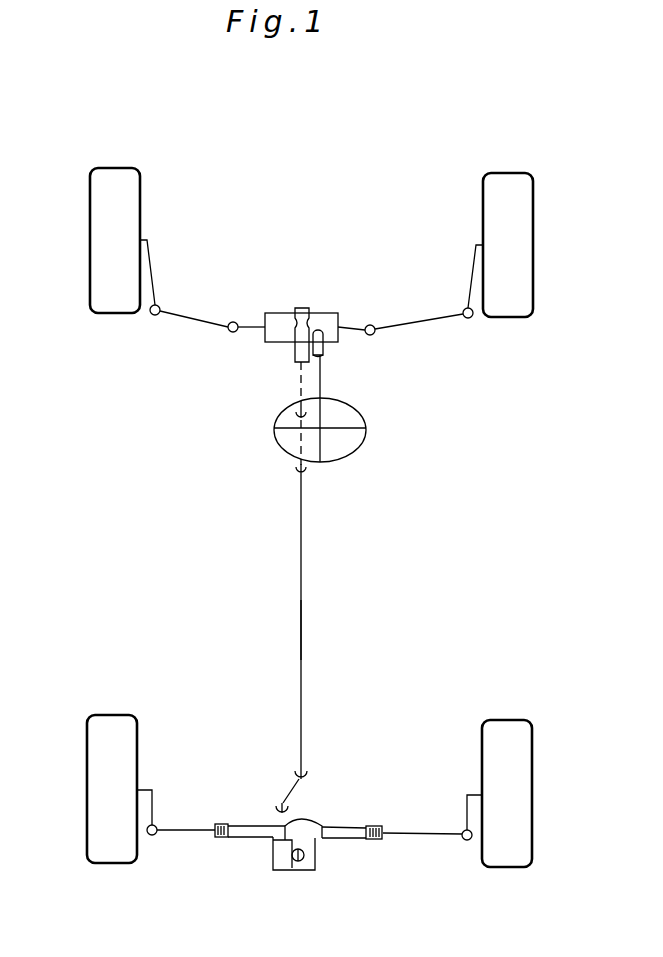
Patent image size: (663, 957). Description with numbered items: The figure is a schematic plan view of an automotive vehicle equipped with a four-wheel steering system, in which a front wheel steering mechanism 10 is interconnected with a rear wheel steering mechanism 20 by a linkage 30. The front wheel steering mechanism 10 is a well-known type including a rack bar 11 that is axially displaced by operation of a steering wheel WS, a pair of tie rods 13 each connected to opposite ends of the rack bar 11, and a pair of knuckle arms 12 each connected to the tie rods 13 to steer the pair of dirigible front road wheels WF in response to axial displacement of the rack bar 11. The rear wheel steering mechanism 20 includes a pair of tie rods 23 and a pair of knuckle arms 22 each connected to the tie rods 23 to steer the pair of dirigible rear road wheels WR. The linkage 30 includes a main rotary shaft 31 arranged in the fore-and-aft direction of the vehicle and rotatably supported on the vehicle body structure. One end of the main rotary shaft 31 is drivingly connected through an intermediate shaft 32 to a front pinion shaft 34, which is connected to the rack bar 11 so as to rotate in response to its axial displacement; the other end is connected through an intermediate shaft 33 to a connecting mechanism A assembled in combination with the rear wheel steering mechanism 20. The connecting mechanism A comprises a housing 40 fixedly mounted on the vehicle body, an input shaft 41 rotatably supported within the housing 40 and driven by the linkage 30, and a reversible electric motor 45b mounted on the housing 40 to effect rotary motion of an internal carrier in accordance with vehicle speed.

The dirigible front road wheels WF is at (90, 180).
The knuckle arms 12 is at (149, 252).
The tie rods 13 is at (183, 321).
The front wheel steering mechanism 10 is at (256, 339).
The rack bar 11 is at (252, 324).
The front pinion shaft 34 is at (298, 375).
The steering wheel WS is at (356, 412).
The intermediate shaft 32 is at (300, 444).
The linkage 30 is at (305, 607).
The main rotary shaft 31 is at (299, 636).
The intermediate shaft 33 is at (287, 793).
The input shaft 41 is at (278, 811).
The dirigible rear road wheels WR is at (93, 742).
The knuckle arms 22 is at (155, 803).
The tie rods 23 is at (189, 833).
The rear wheel steering mechanism 20 is at (384, 825).
The housing 40 is at (310, 844).
The reversible electric motor 45b is at (299, 861).
The connecting mechanism A is at (270, 850).